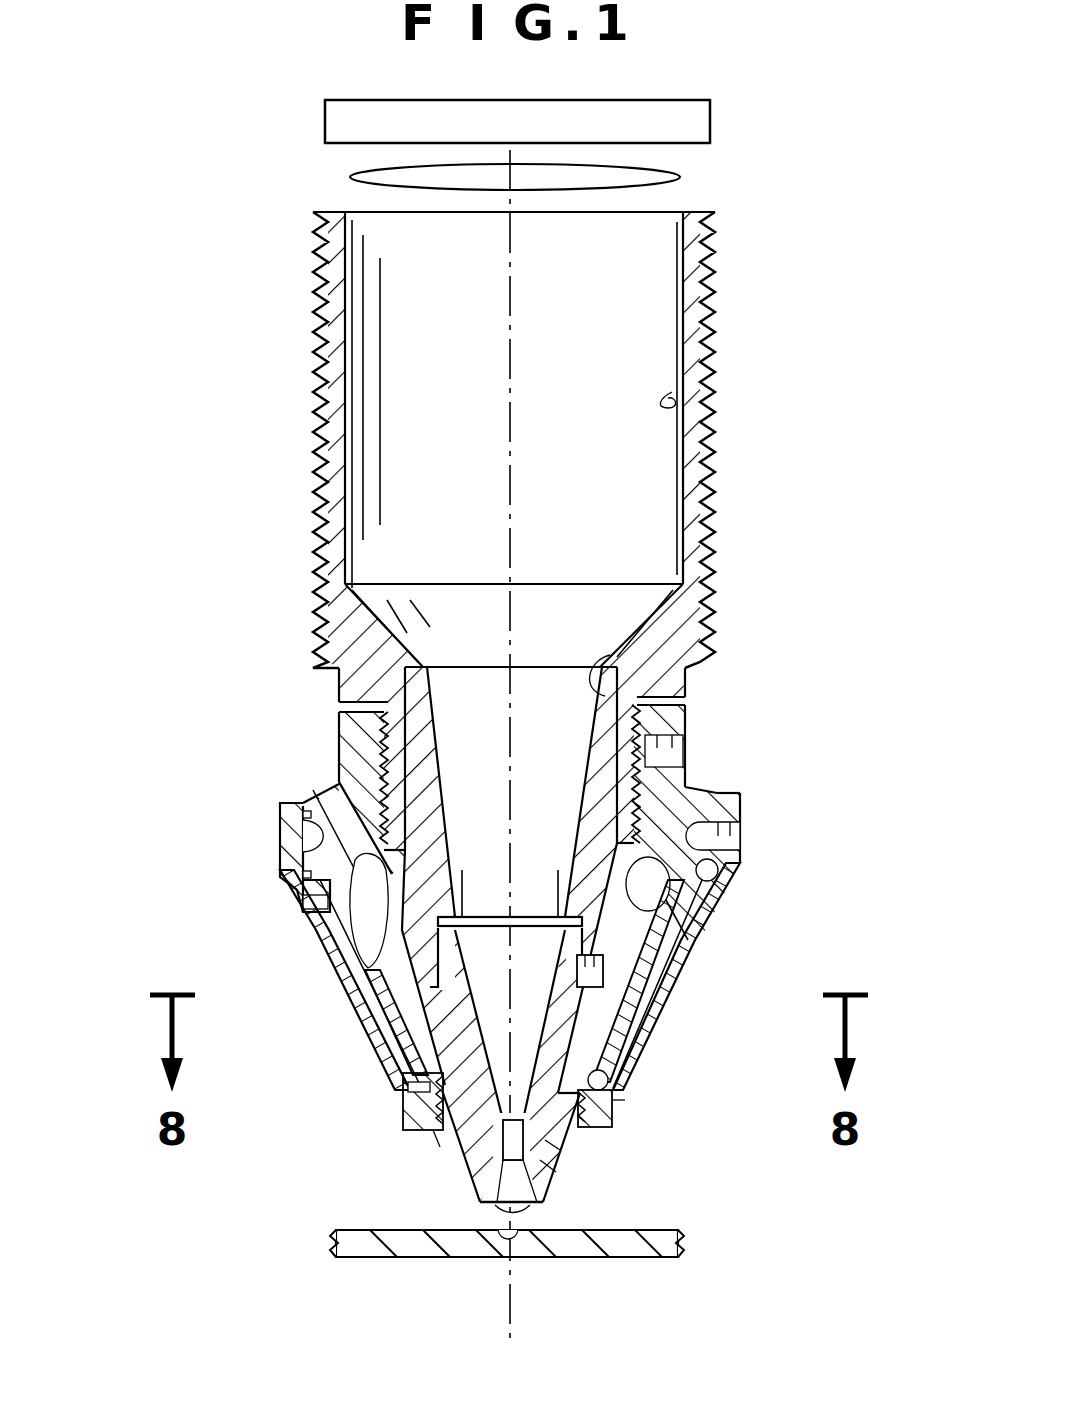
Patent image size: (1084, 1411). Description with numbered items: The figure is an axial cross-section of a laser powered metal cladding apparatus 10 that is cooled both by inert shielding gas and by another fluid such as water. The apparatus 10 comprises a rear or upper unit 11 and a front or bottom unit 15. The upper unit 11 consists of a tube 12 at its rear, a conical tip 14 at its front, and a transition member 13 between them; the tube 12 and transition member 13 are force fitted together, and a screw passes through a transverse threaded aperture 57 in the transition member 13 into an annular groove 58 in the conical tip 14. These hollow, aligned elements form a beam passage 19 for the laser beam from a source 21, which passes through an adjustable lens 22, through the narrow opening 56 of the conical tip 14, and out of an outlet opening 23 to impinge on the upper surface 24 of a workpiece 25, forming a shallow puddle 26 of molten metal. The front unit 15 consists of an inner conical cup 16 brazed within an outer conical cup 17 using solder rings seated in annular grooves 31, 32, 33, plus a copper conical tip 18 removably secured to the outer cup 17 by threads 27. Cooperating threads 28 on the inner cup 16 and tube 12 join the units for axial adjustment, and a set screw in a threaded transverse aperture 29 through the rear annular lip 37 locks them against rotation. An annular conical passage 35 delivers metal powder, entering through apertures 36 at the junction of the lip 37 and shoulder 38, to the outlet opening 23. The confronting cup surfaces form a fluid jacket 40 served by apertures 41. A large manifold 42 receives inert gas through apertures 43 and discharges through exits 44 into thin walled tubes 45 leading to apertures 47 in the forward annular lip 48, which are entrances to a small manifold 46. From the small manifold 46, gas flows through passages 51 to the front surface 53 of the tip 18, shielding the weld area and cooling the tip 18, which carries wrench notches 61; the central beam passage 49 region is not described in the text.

The laser powered metal cladding apparatus 10 is at (724, 270).
The rear or upper unit 11 is at (318, 406).
The tube 12 is at (684, 525).
The transition member 13 is at (612, 652).
The conical tip 14 is at (548, 977).
The front or bottom unit 15 is at (360, 1035).
The inner conical cup 16 is at (340, 957).
The outer conical cup 17 is at (378, 1060).
The conical tip 18 is at (560, 1195).
The beam passage 19 is at (670, 396).
The source 21 is at (712, 118).
The adjustable lens 22 is at (680, 176).
The outlet opening 23 is at (522, 1205).
The upper surface 24 is at (353, 1232).
The workpiece 25 is at (666, 1262).
The puddle 26 is at (490, 1258).
The threads 27 is at (612, 1120).
The cooperating threads 28 is at (385, 772).
The threaded transverse aperture 29 is at (690, 737).
The annular groove 31 is at (303, 813).
The annular groove 32 is at (303, 881).
The annular groove 33 is at (624, 1078).
The annular conical passage 35 is at (697, 936).
The apertures 36 is at (328, 783).
The rear annular lip 37 is at (338, 726).
The shoulder 38 is at (716, 790).
The fluid jacket 40 is at (378, 988).
The apertures 41 is at (306, 921).
The large manifold 42 is at (318, 843).
The apertures 43 is at (745, 830).
The exits 44 is at (720, 862).
The thin walled tube 45 is at (720, 916).
The small manifold 46 is at (420, 1132).
The apertures 47 is at (616, 1104).
The annular lip 48 is at (412, 1102).
The central passage 49 is at (480, 1040).
The passages 51 is at (558, 1152).
The front surface 53 is at (487, 1202).
The opening 56 is at (556, 1172).
The transverse threaded aperture 57 is at (612, 964).
The annular groove 58 is at (473, 973).
The notches 61 is at (437, 1150).